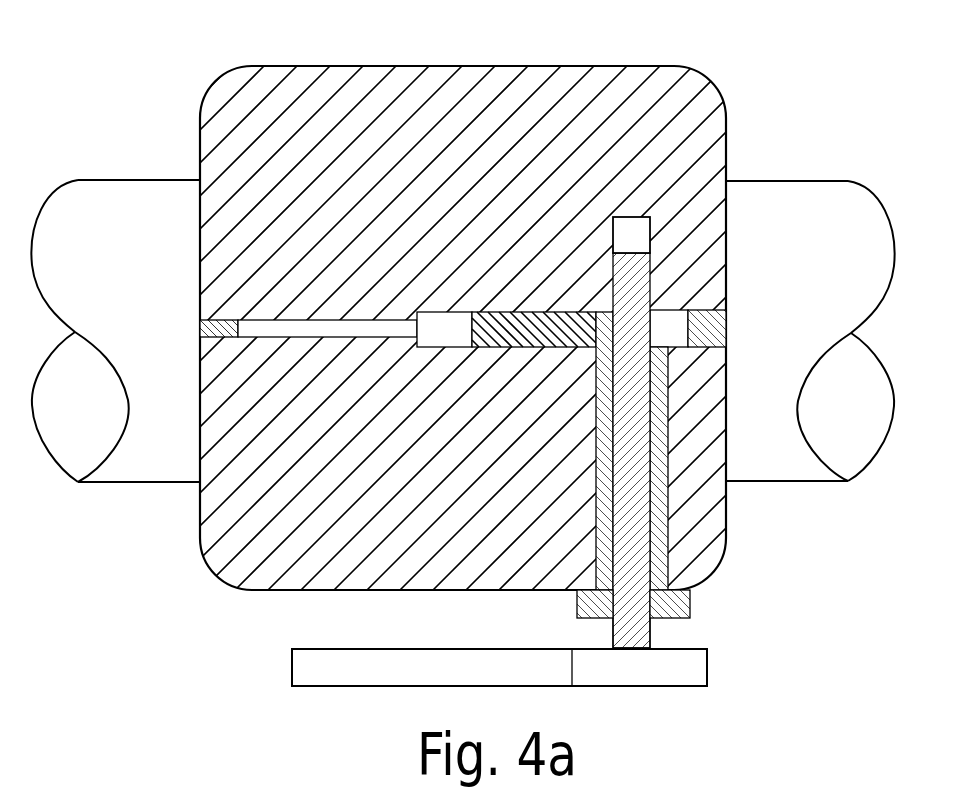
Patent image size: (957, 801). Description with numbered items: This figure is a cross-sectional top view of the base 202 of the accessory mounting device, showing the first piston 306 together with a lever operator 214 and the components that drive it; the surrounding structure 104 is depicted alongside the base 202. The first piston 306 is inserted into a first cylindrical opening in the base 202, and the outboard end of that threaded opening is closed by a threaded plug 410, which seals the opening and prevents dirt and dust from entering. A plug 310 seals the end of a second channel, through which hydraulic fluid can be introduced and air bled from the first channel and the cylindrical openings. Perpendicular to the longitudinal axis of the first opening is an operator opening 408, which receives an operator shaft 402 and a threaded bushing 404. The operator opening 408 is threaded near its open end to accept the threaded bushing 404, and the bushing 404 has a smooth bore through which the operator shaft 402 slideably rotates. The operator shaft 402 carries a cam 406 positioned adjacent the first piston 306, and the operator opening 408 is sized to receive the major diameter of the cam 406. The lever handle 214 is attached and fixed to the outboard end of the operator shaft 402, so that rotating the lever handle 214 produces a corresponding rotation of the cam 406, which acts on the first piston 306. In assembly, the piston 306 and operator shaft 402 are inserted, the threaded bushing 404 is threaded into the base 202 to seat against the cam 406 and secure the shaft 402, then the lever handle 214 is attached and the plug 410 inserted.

The base 202 is at (357, 66).
The pipe / conduit 104 is at (772, 181).
The plug 310 is at (200, 328).
The first piston 306 is at (522, 348).
The cam 406 is at (727, 274).
The operator opening 408 is at (650, 228).
The threaded plug 410 is at (727, 330).
The threaded bushing 404 is at (690, 602).
The operator shaft 402 is at (650, 637).
The lever handle 214 is at (380, 649).